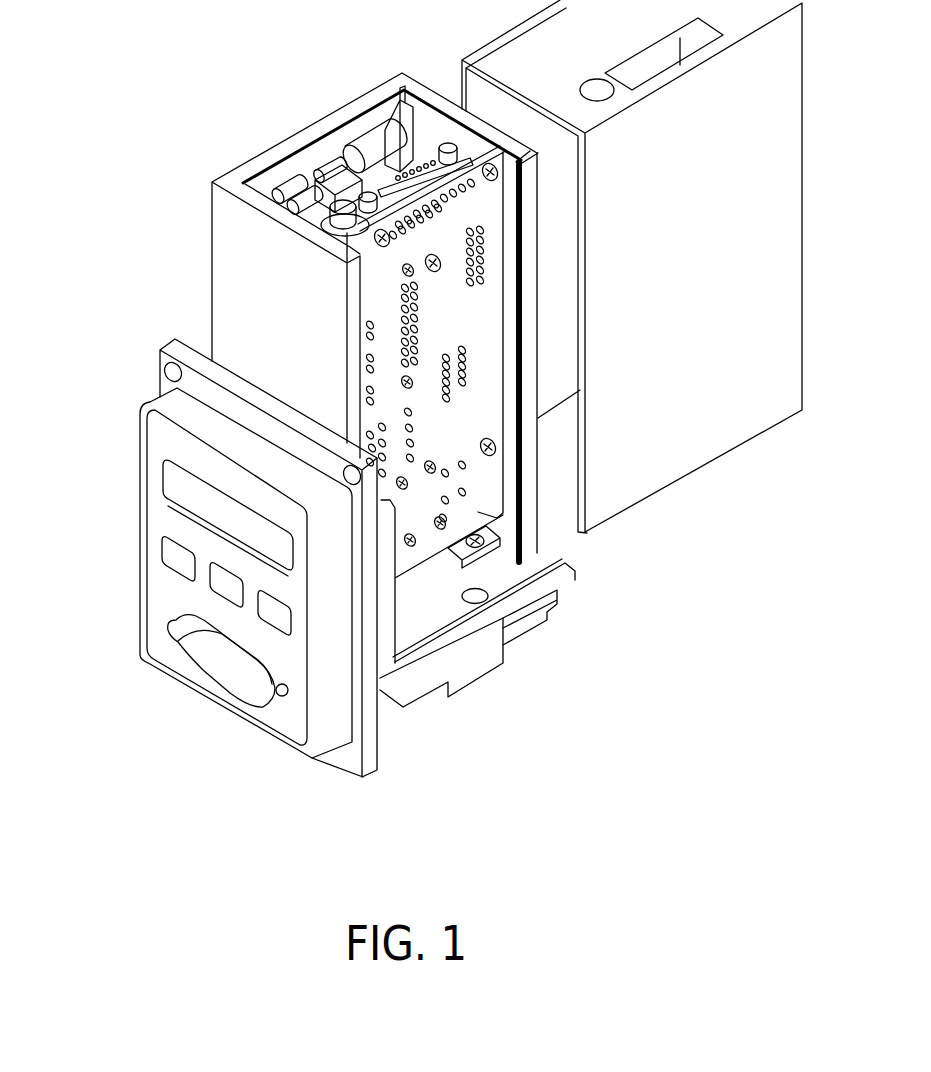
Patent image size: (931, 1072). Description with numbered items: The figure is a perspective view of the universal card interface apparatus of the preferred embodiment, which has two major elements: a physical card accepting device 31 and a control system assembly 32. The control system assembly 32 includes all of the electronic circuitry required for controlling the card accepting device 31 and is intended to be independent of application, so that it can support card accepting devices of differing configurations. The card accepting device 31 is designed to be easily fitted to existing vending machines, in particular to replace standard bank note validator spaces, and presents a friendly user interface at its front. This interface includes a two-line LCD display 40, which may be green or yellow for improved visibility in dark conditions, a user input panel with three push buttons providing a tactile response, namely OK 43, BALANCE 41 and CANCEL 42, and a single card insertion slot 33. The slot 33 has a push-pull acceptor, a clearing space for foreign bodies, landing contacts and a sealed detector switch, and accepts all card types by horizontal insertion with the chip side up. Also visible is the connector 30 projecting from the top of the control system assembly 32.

The connector 30 is at (393, 127).
The card accepting device 31 is at (473, 682).
The control system assembly 32 is at (478, 512).
The card insertion slot 33 is at (227, 638).
The LCD display 40 is at (185, 488).
The BALANCE push button 41 is at (175, 555).
The CANCEL push button 42 is at (222, 592).
The OK push button 43 is at (270, 612).